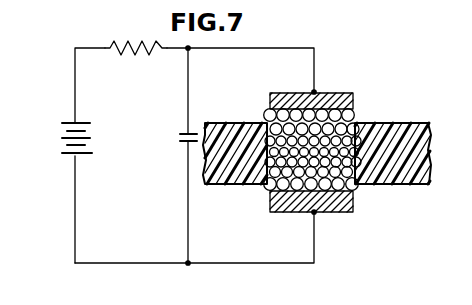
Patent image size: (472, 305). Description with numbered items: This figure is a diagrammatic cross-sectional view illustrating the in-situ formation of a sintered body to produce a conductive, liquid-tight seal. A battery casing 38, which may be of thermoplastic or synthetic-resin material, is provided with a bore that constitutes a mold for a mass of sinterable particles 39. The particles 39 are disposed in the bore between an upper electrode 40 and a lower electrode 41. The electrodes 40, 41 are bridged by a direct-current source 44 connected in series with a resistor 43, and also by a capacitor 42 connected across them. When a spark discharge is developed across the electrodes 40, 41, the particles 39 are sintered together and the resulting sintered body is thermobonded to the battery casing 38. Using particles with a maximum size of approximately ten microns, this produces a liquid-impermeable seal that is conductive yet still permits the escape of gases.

The battery casing 38 is at (378, 123).
The sinterable particles 39 is at (356, 186).
The electrode 40 is at (285, 91).
The electrode 41 is at (275, 201).
The capacitor 42 is at (180, 141).
The resistor 43 is at (118, 50).
The direct-current source 44 is at (92, 143).